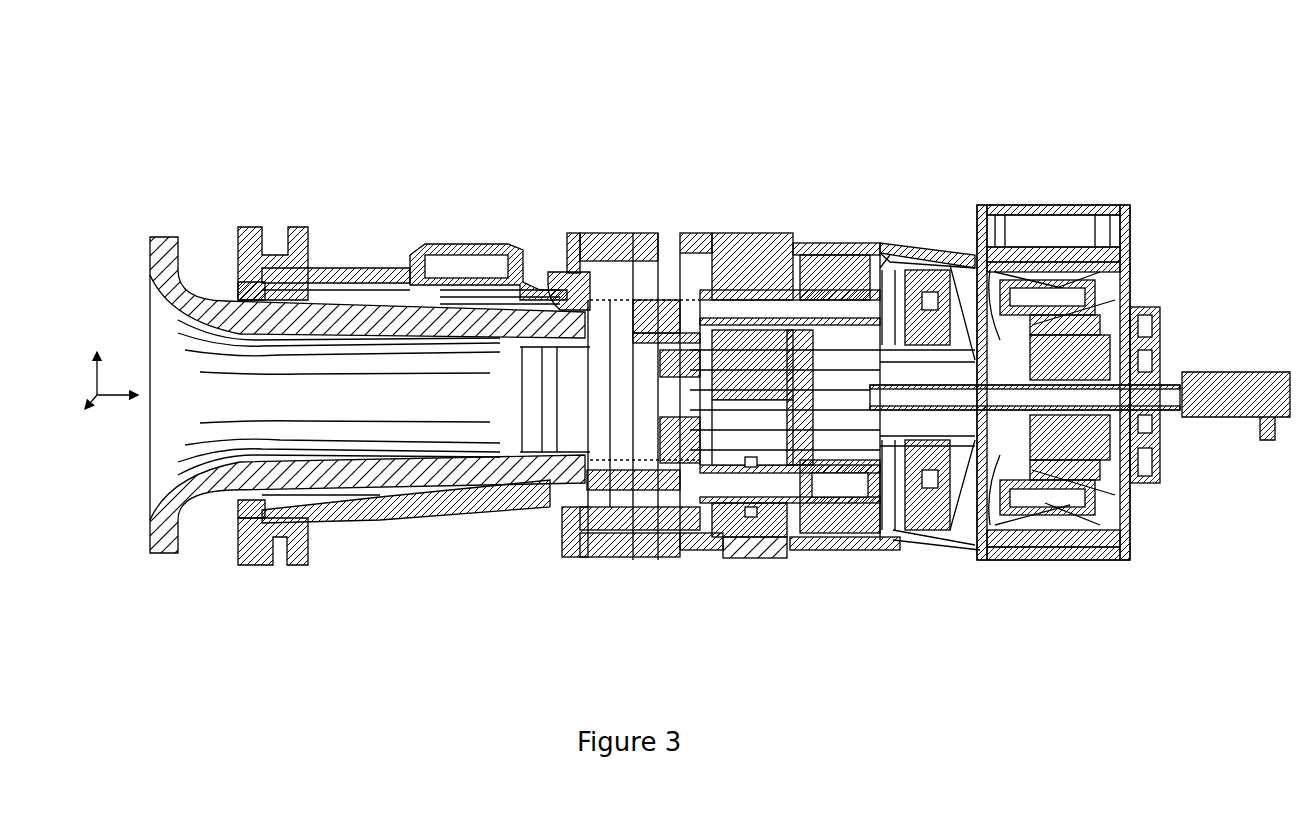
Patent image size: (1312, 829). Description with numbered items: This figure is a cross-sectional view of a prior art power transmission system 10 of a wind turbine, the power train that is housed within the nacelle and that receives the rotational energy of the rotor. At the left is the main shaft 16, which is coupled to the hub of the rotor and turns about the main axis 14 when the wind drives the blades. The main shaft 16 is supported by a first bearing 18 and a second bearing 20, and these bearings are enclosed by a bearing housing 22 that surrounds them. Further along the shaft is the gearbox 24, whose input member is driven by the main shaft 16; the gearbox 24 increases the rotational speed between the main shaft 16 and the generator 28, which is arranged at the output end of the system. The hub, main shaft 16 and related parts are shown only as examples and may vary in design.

The power transmission system 10 is at (930, 92).
The main axis 14 is at (111, 397).
The main shaft 16 is at (163, 236).
The first bearing 18 is at (238, 283).
The second bearing 20 is at (562, 272).
The bearing housing 22 is at (348, 267).
The gearbox 24 is at (777, 178).
The generator 28 is at (1047, 204).